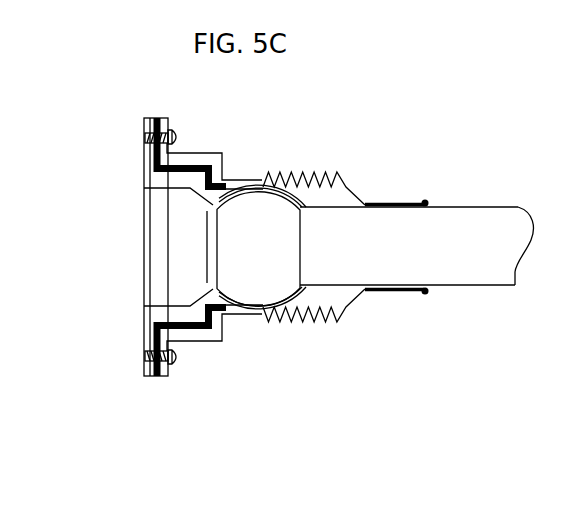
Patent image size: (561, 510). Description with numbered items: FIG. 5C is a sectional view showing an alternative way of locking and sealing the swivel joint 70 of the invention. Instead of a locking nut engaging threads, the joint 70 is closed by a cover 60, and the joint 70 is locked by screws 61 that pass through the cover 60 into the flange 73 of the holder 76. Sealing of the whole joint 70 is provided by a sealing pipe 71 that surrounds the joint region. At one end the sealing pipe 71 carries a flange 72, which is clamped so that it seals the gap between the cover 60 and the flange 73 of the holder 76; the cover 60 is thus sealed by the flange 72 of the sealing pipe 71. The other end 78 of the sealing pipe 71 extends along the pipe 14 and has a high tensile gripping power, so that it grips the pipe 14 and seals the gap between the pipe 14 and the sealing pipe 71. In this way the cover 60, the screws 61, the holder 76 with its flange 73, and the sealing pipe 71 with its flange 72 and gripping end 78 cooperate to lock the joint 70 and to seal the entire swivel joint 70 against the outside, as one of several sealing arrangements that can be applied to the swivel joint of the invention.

The pipe 14 is at (485, 272).
The cover 60 is at (220, 156).
The screws 61 is at (177, 140).
The joint 70 is at (472, 147).
The sealing pipe 71 is at (245, 313).
The flange 72 is at (158, 373).
The flange 73 is at (152, 127).
The holder 76 is at (152, 244).
The other end 78 is at (425, 292).